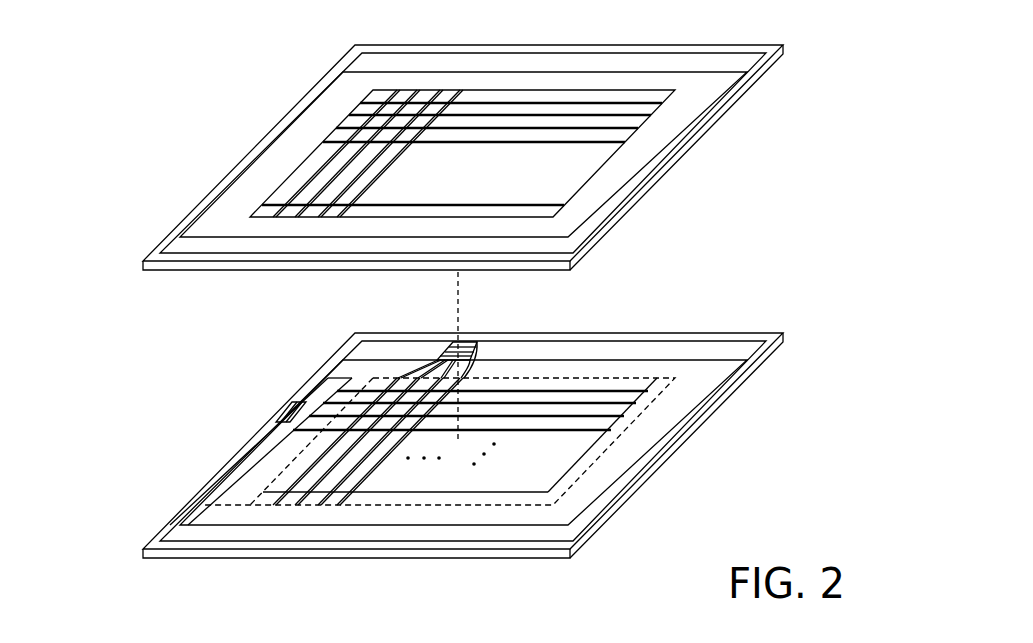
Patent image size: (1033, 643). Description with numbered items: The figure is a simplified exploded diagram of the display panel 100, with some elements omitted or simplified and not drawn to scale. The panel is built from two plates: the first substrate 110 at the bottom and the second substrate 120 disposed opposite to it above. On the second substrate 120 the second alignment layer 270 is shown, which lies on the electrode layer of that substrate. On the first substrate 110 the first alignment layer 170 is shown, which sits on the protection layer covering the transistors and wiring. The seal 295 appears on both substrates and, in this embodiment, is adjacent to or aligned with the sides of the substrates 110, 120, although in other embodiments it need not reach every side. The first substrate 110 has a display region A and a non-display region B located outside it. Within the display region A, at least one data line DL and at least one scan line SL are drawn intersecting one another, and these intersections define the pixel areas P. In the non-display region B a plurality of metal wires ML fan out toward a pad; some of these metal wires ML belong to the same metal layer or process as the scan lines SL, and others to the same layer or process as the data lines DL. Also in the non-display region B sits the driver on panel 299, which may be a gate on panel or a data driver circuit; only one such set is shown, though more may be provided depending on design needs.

The display panel 100 is at (114, 54).
The first substrate 110 is at (678, 454).
The second substrate 120 is at (678, 166).
The first alignment layer 170 is at (693, 398).
The second alignment layer 270 is at (693, 108).
The seal 295 is at (283, 127).
The driver on panel 299 is at (302, 403).
The pixel P is at (391, 392).
The metal wires ML is at (440, 345).
The non-display region B is at (549, 366).
The data line DL is at (290, 488).
The scan line SL is at (318, 482).
The display region A is at (450, 510).